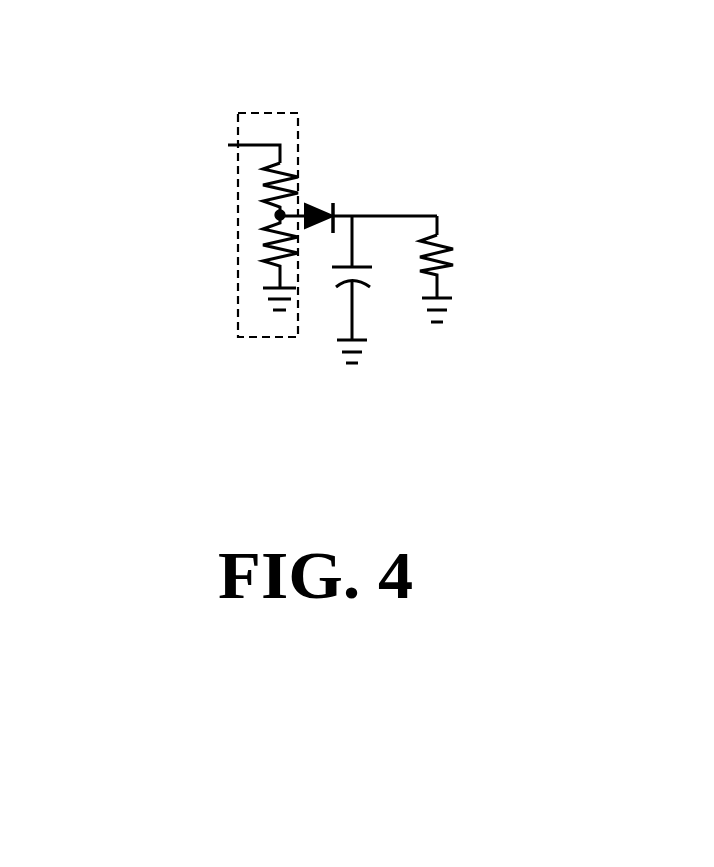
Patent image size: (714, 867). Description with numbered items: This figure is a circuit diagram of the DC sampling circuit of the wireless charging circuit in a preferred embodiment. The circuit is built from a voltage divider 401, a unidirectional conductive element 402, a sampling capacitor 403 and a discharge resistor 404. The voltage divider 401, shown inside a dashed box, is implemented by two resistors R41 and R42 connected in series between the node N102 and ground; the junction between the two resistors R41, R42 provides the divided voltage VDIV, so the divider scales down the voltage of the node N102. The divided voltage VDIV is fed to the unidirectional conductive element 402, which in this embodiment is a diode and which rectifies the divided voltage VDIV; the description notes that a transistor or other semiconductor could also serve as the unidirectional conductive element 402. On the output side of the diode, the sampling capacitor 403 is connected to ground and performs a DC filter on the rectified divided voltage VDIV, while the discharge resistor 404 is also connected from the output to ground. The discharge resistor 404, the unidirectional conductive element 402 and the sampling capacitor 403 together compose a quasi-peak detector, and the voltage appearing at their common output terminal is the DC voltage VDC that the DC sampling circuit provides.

The voltage divider 401 is at (170, 188).
The unidirectional conductive element 402 is at (330, 198).
The sampling capacitor 403 is at (373, 283).
The discharge resistor 404 is at (453, 258).
The resistor R41 is at (256, 172).
The resistor R42 is at (263, 255).
The node N102 is at (221, 148).
The divided voltage VDIV is at (275, 215).
The DC voltage VDC is at (471, 220).